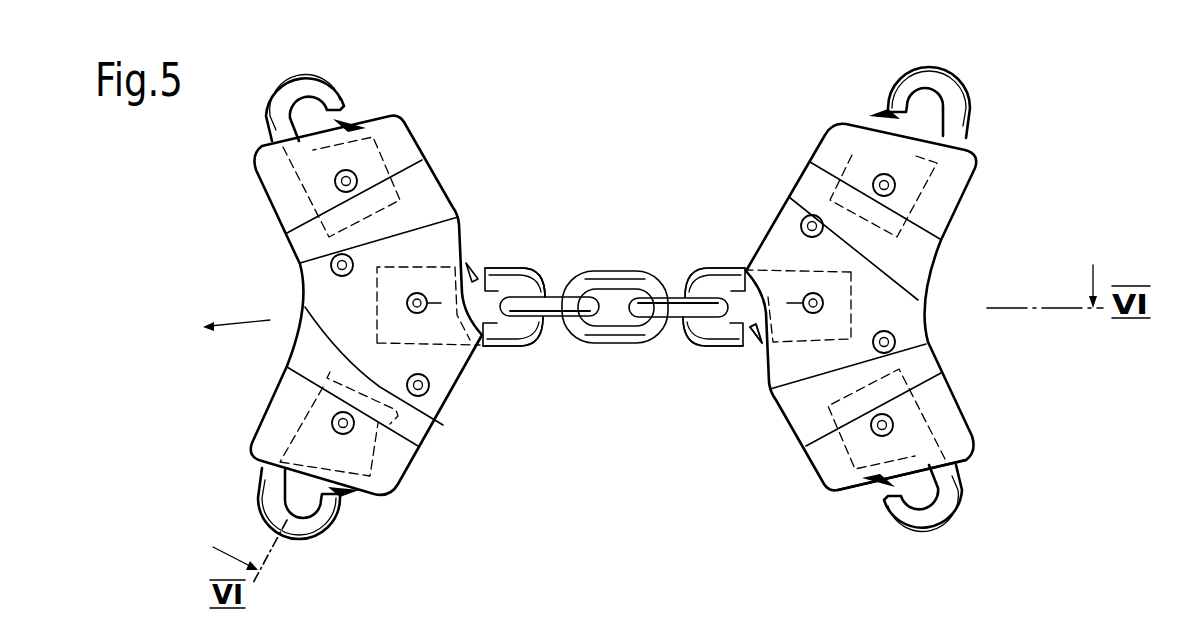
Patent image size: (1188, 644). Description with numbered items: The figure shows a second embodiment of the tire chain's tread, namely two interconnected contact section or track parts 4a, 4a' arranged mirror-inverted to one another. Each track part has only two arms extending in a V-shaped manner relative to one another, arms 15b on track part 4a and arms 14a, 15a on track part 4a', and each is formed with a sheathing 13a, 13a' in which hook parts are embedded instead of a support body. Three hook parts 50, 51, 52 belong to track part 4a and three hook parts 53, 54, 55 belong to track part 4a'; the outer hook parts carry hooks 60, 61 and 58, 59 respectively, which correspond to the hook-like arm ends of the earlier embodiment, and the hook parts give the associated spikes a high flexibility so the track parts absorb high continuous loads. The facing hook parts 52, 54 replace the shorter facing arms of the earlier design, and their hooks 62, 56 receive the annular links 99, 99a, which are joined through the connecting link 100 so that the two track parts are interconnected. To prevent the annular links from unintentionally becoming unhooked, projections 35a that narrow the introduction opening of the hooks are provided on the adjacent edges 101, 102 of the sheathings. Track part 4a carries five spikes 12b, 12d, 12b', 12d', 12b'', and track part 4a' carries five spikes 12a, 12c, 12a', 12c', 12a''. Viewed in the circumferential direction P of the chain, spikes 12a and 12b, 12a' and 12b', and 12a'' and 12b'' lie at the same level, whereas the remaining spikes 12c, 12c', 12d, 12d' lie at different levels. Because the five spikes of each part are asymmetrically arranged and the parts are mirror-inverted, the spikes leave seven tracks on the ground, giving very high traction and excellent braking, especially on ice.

The contact section or track part 4a is at (374, 263).
The contact section or track part 4a' is at (861, 278).
The arm 15b is at (267, 170).
The arm 15a is at (833, 133).
The sheathing 13a is at (288, 421).
The sheathing 13a' is at (946, 314).
The arm 14a is at (850, 487).
The circumferential direction P is at (225, 327).
The spike 12b'' is at (396, 106).
The spike 12d' is at (259, 259).
The spike 12d is at (448, 484).
The spike 12b is at (376, 503).
The spike 12b' is at (472, 197).
The spike 12a is at (845, 494).
The spike 12c is at (970, 336).
The spike 12c' is at (771, 140).
The spike 12a'' is at (990, 150).
The spike 12a' is at (922, 278).
The hook part 51 is at (323, 66).
The hook 61 is at (335, 88).
The hook part 50 is at (310, 550).
The hook 60 is at (331, 527).
The hook part 53 is at (913, 548).
The hook 58 is at (957, 523).
The hook part 55 is at (904, 68).
The hook 59 is at (963, 90).
The annular link 99 is at (555, 320).
The annular link 99a is at (677, 322).
The connecting link 100 is at (608, 345).
The hook 62 is at (541, 278).
The edge 101 is at (533, 282).
The hook part 52 is at (515, 358).
The hook 56 is at (713, 350).
The hook part 54 is at (702, 256).
The projection 35a is at (476, 278).
The edge 102 is at (750, 330).